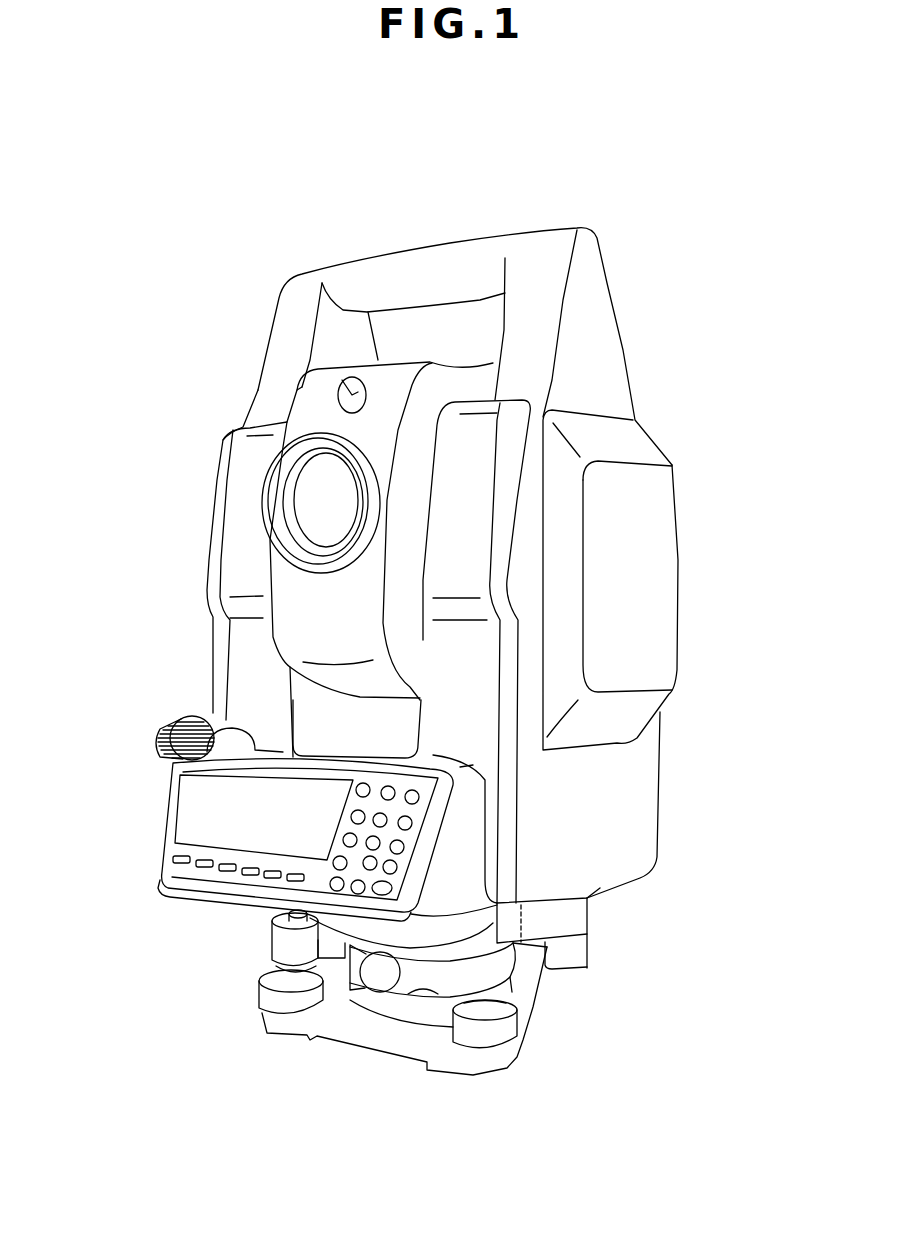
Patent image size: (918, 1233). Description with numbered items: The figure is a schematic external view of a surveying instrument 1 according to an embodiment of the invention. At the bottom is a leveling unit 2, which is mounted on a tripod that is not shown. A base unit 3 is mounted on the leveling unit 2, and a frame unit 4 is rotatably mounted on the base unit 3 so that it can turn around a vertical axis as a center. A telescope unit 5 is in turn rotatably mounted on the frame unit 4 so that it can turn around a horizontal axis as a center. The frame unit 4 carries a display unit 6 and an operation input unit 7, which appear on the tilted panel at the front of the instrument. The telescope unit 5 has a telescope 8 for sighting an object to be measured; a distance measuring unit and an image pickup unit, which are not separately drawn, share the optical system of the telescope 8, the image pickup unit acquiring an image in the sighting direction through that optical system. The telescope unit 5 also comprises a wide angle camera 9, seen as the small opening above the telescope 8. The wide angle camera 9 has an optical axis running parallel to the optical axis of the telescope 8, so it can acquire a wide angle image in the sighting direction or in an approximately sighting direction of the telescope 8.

The surveying instrument 1 is at (102, 251).
The leveling unit 2 is at (265, 1033).
The base unit 3 is at (590, 968).
The frame unit 4 is at (657, 438).
The telescope unit 5 is at (295, 632).
The display unit 6 is at (250, 810).
The operation input unit 7 is at (232, 877).
The telescope 8 is at (317, 493).
The wide angle camera 9 is at (337, 387).